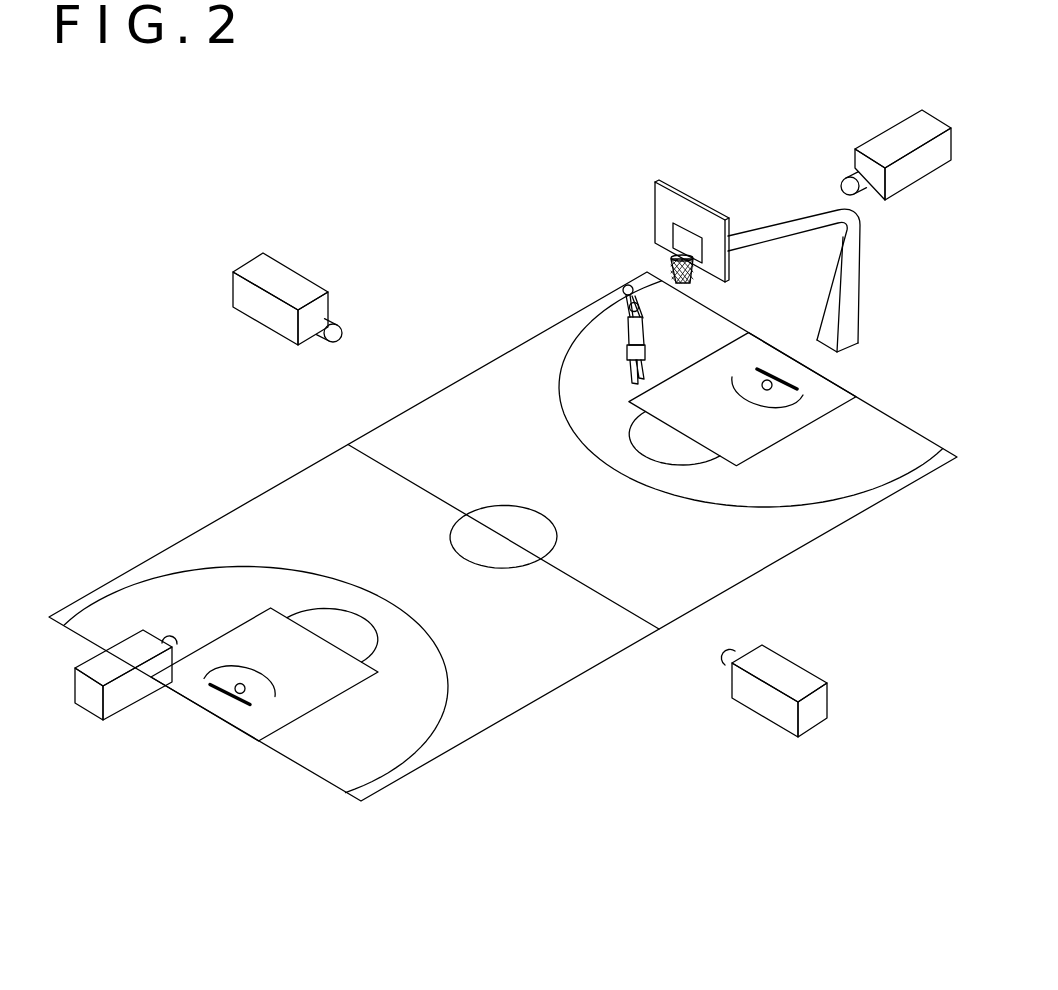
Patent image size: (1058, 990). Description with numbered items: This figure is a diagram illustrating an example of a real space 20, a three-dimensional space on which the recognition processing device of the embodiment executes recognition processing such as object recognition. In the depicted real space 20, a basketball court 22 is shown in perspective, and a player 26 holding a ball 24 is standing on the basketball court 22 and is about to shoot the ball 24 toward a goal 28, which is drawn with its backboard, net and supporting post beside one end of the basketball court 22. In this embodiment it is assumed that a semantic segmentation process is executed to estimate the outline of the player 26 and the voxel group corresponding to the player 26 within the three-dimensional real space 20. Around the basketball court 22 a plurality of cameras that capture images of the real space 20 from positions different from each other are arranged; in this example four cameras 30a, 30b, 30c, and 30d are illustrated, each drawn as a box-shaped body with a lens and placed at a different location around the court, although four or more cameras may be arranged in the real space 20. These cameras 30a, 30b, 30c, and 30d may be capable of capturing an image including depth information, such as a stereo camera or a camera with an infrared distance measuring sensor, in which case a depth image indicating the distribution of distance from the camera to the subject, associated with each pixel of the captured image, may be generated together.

The real space 20 is at (503, 576).
The basketball court 22 is at (497, 800).
The ball 24 is at (627, 285).
The player 26 is at (627, 320).
The goal 28 is at (852, 322).
The camera 30a is at (130, 708).
The camera 30b is at (822, 725).
The camera 30c is at (900, 140).
The camera 30d is at (256, 268).